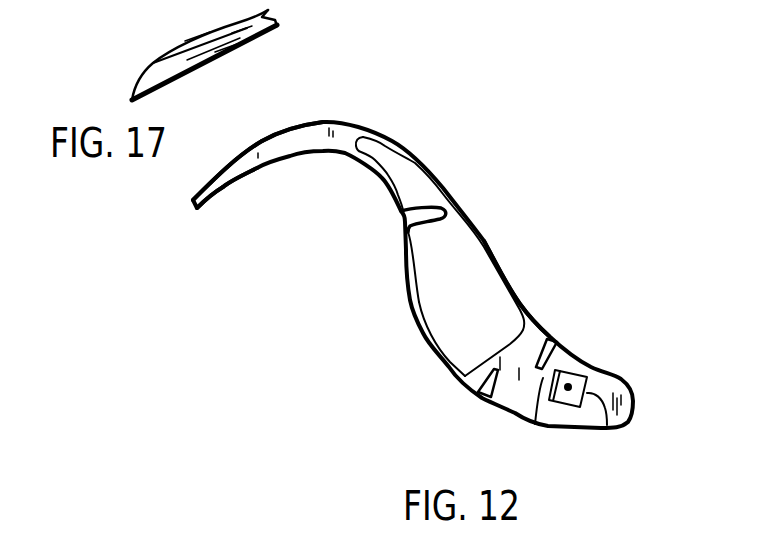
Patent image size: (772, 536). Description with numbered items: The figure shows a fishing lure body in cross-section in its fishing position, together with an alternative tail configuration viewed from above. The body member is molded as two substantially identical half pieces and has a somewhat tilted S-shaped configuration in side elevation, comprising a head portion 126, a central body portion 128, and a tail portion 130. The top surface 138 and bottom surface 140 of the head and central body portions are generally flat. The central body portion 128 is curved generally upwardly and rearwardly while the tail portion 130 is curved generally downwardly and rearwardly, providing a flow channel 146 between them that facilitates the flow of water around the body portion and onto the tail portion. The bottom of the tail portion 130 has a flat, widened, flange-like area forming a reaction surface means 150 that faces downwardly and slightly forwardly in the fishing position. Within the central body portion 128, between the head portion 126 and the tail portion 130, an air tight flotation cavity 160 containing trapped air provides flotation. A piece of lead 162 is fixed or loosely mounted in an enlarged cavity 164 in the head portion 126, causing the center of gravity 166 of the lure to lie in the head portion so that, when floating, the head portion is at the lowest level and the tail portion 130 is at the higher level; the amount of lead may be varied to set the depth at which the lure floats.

In FIG. 12, the head portion 126 is at (517, 400).
In FIG. 12, the central body portion 128 is at (411, 312).
In FIG. 17, the tail portion 130 is at (165, 68).
In FIG. 12, the tail portion 130 is at (302, 140).
In FIG. 12, the top surface 138 is at (515, 312).
In FIG. 12, the bottom surface 140 is at (431, 360).
In FIG. 12, the flow channel 146 is at (345, 183).
In FIG. 12, the reaction surface means 150 is at (220, 191).
In FIG. 12, the flotation cavity 160 is at (480, 290).
In FIG. 12, the piece of lead 162 is at (581, 382).
In FIG. 12, the enlarged cavity 164 is at (535, 428).
In FIG. 12, the center of gravity 166 is at (607, 427).